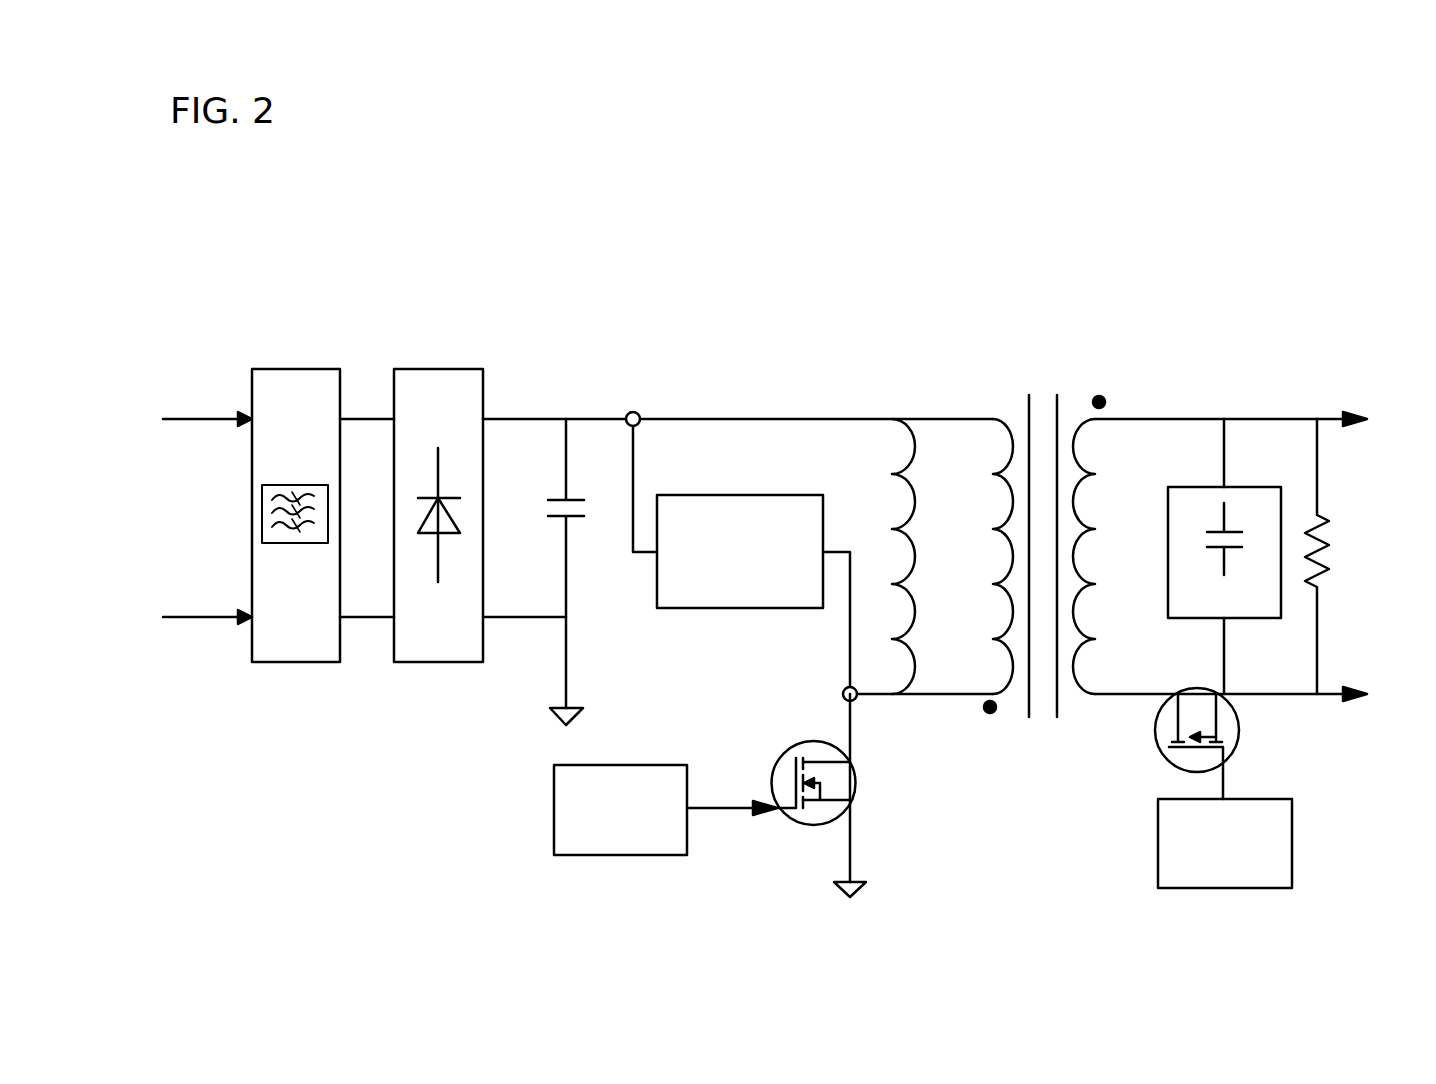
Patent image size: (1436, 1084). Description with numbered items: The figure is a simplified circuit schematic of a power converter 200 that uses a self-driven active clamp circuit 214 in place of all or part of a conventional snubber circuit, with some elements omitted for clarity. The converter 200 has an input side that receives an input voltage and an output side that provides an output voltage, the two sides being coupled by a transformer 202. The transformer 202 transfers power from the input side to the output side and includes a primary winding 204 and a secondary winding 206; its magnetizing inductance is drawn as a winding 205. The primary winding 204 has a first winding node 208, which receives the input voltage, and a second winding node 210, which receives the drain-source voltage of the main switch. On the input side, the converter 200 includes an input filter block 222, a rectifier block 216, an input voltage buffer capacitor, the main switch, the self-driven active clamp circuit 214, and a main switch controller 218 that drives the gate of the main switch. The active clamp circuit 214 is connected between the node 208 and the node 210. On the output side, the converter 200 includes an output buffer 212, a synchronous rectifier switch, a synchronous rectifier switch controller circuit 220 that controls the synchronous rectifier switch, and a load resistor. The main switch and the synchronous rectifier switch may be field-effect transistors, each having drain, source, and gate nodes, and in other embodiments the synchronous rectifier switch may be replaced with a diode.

The power converter 200 is at (218, 205).
The transformer 202 is at (1029, 717).
The primary winding 204 is at (1034, 373).
The winding 205 is at (910, 574).
The secondary winding 206 is at (1133, 373).
The first winding node 208 is at (626, 412).
The second winding node 210 is at (852, 703).
The output buffer 212 is at (1224, 556).
The self-driven active clamp circuit 214 is at (741, 556).
The rectifier block 216 is at (438, 515).
The main switch controller 218 is at (665, 810).
The synchronous rectifier switch controller circuit 220 is at (1225, 843).
The input filter block 222 is at (296, 515).